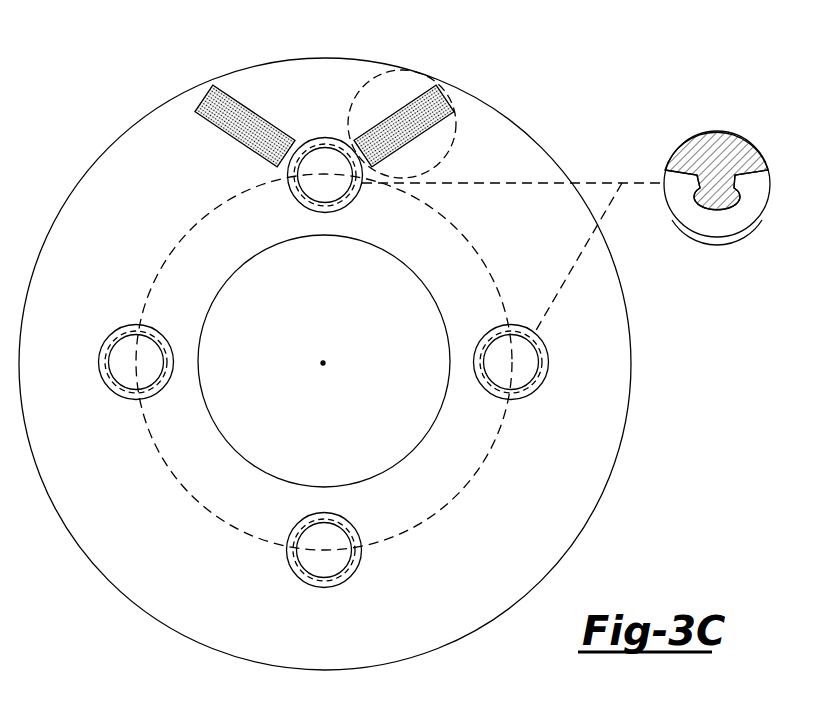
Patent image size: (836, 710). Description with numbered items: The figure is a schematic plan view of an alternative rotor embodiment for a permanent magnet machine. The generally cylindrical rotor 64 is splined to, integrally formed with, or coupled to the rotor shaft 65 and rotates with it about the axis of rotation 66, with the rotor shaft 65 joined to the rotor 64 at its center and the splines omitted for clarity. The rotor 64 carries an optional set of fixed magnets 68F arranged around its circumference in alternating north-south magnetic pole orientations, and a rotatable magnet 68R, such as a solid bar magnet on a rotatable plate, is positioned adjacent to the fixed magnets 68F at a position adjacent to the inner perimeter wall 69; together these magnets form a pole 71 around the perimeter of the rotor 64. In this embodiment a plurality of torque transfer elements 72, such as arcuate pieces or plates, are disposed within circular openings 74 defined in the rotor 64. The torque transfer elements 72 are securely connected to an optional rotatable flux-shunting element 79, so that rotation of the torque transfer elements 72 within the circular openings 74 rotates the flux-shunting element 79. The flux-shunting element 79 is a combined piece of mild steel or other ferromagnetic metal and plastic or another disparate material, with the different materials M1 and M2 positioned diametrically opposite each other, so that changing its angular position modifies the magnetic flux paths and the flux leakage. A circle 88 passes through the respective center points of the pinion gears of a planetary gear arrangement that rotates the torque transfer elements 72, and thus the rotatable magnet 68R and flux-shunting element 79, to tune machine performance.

The rotor 64 is at (525, 167).
The rotor shaft 65 is at (336, 315).
The axis of rotation 66 is at (323, 367).
The fixed magnets 68F is at (233, 137).
The rotatable magnets 68R is at (474, 97).
The inner perimeter wall 69 is at (406, 458).
The pole 71 is at (284, 94).
The torque transfer elements 72 is at (337, 137).
The circular openings 74 is at (324, 178).
The flux-shunting element 79 is at (683, 118).
The circle 88 is at (483, 257).
The first material M1 is at (720, 131).
The second material M2 is at (735, 235).